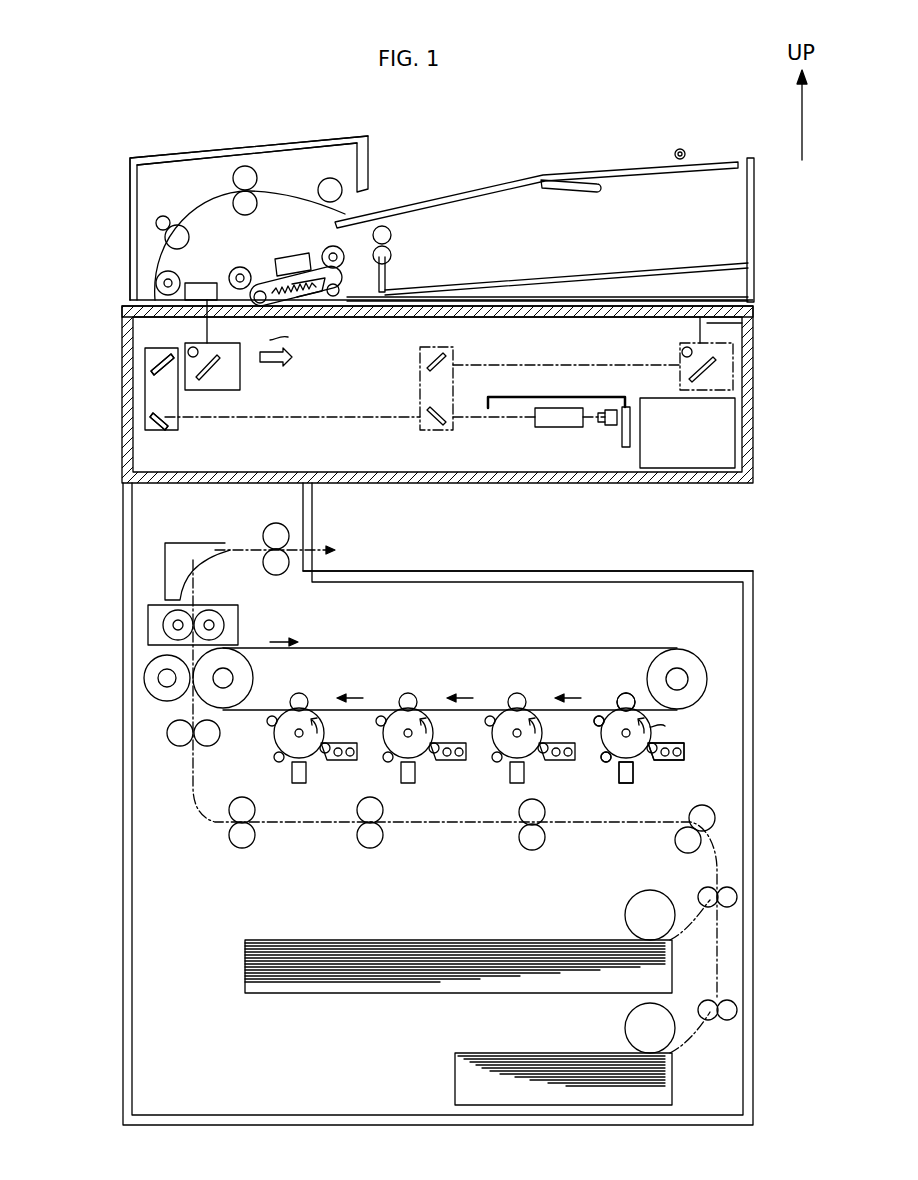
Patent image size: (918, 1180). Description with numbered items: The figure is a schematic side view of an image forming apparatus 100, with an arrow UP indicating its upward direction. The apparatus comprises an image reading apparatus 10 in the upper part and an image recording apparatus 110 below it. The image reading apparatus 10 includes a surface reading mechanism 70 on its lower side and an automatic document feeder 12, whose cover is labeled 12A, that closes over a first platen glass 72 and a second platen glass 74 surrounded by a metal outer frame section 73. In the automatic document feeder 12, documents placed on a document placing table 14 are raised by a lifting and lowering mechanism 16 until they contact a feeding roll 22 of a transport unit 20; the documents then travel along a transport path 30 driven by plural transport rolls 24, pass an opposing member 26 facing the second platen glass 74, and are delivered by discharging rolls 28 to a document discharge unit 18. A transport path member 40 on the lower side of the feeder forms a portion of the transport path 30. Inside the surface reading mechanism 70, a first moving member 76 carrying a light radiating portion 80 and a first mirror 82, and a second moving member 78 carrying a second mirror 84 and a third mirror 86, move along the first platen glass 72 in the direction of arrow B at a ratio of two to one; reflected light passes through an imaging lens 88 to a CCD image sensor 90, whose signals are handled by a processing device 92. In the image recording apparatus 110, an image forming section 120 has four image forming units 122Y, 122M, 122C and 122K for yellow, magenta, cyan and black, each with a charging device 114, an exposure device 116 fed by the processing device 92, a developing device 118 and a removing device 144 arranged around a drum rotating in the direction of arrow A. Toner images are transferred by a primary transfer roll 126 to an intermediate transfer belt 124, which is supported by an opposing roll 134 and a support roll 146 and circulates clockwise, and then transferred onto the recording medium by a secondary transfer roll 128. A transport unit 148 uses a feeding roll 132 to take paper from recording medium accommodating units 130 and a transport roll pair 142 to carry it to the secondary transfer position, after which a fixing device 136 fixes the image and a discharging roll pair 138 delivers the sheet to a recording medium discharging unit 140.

The image forming apparatus 100 is at (101, 121).
The image reading apparatus 10 is at (114, 160).
The automatic document feeder 12 is at (765, 246).
The transport device cover 12A is at (131, 157).
The document placing table 14 is at (616, 165).
The lifting and lowering mechanism 16 is at (558, 190).
The document discharge unit 18 is at (603, 273).
The transport unit 20 is at (281, 162).
The feeding roll 22 is at (330, 178).
The transport rolls 24 is at (233, 198).
The opposing member 26 is at (203, 282).
The discharging rolls 28 is at (392, 255).
The transport path 30 is at (205, 210).
The transport path member 40 is at (355, 290).
The surface reading mechanism 70 is at (467, 413).
The first platen glass 72 is at (437, 334).
The outer frame section 73 is at (497, 316).
The second platen glass 74 is at (210, 315).
The first moving member 76 is at (240, 383).
The second moving member 78 is at (180, 428).
The light radiating portion 80 is at (188, 350).
The first mirror 82 is at (212, 378).
The second mirror 84 is at (152, 376).
The third mirror 86 is at (162, 428).
The imaging lens 88 is at (555, 428).
The CCD image sensor 90 is at (612, 427).
The processing device 92 is at (730, 470).
The image recording apparatus 110 is at (118, 483).
The charging device 114 is at (605, 762).
The exposure device 116 is at (624, 785).
The developing device 118 is at (680, 758).
The image forming section 120 is at (722, 740).
The image forming unit 122K is at (325, 771).
The image forming unit 122C is at (434, 771).
The image forming unit 122M is at (543, 771).
The image forming unit 122Y is at (652, 771).
The intermediate transfer belt 124 is at (493, 647).
The primary transfer roll 126 is at (626, 692).
The secondary transfer roll 128 is at (160, 700).
The recording medium accommodating unit 130 is at (245, 963).
The feeding roll 132 is at (625, 910).
The opposing roll 134 is at (253, 674).
The fixing device 136 is at (240, 627).
The discharging roll pair 138 is at (265, 556).
The recording medium discharging unit 140 is at (455, 570).
The transport roll pair 142 is at (183, 745).
The removing device 144 is at (602, 715).
The support roll 146 is at (708, 678).
The transport unit 148 is at (720, 1050).